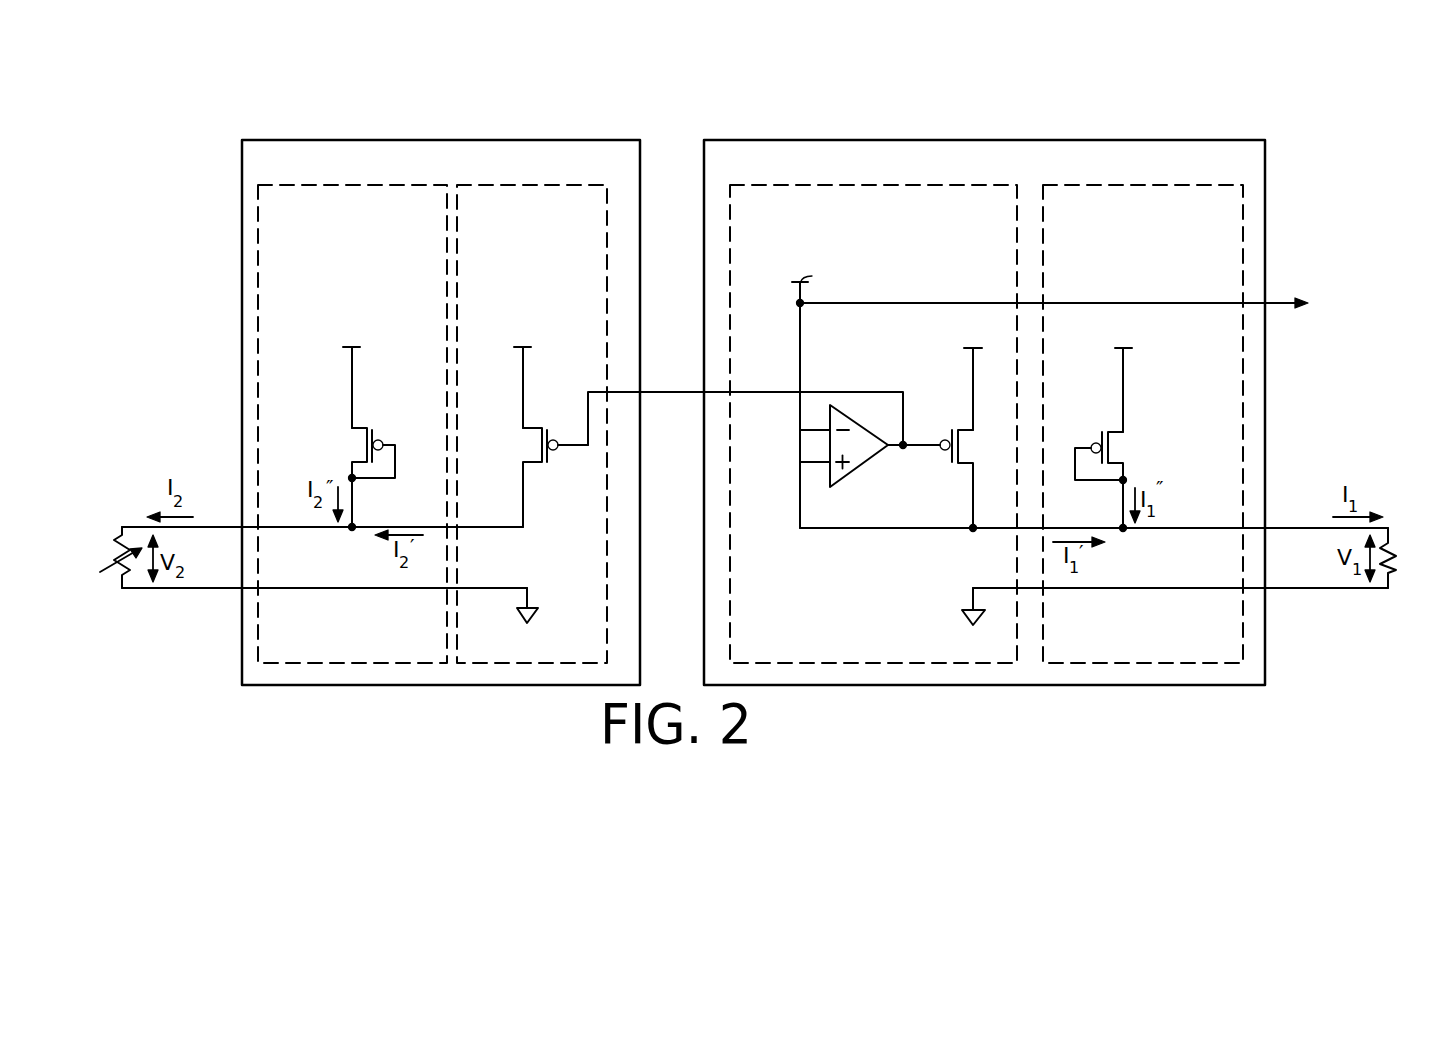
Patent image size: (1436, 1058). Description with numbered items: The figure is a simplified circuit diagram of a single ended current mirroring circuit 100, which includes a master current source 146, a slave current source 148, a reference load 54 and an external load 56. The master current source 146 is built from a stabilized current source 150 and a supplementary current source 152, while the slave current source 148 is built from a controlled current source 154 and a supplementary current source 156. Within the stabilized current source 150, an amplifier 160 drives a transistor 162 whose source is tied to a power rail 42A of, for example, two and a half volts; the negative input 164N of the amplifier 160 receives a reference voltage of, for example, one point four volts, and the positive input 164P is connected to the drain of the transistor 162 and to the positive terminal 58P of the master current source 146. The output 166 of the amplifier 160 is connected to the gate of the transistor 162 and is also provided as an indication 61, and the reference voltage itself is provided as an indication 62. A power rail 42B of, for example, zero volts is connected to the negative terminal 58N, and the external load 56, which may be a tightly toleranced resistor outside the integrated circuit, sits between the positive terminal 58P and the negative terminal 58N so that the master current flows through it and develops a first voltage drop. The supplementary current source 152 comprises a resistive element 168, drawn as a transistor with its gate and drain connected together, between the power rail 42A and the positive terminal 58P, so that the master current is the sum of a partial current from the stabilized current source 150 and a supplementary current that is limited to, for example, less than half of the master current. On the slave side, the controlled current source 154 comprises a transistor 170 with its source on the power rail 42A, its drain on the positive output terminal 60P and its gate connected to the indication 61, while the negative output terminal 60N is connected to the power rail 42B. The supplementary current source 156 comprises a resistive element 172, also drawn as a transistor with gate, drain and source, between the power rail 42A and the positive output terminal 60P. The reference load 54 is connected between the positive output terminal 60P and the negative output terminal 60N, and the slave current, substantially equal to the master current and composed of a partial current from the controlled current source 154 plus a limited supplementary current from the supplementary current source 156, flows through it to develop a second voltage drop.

The single ended current mirroring circuit 100 is at (1285, 236).
The master current source 146 is at (1165, 174).
The slave current source 148 is at (608, 176).
The stabilized current source 150 is at (932, 238).
The supplementary current source 152 is at (1158, 260).
The controlled current source 154 is at (590, 258).
The supplementary current source 156 is at (410, 258).
The amplifier 160 is at (853, 471).
The transistor 162 is at (966, 428).
The negative input 164N is at (822, 431).
The positive input 164P is at (822, 462).
The output 166 is at (903, 450).
The resistive element 168 is at (1115, 431).
The transistor 170 is at (531, 465).
The resistive element 172 is at (360, 428).
The power rail 42A is at (352, 347).
The power rail 42B is at (522, 616).
The reference load 54 is at (112, 557).
The external load 56 is at (1393, 573).
The positive terminal 58P is at (1272, 530).
The negative terminal 58N is at (1272, 592).
The positive output terminal 60P is at (233, 528).
The negative output terminal 60N is at (233, 590).
The indication 61 is at (655, 392).
The indication 62 is at (1283, 303).